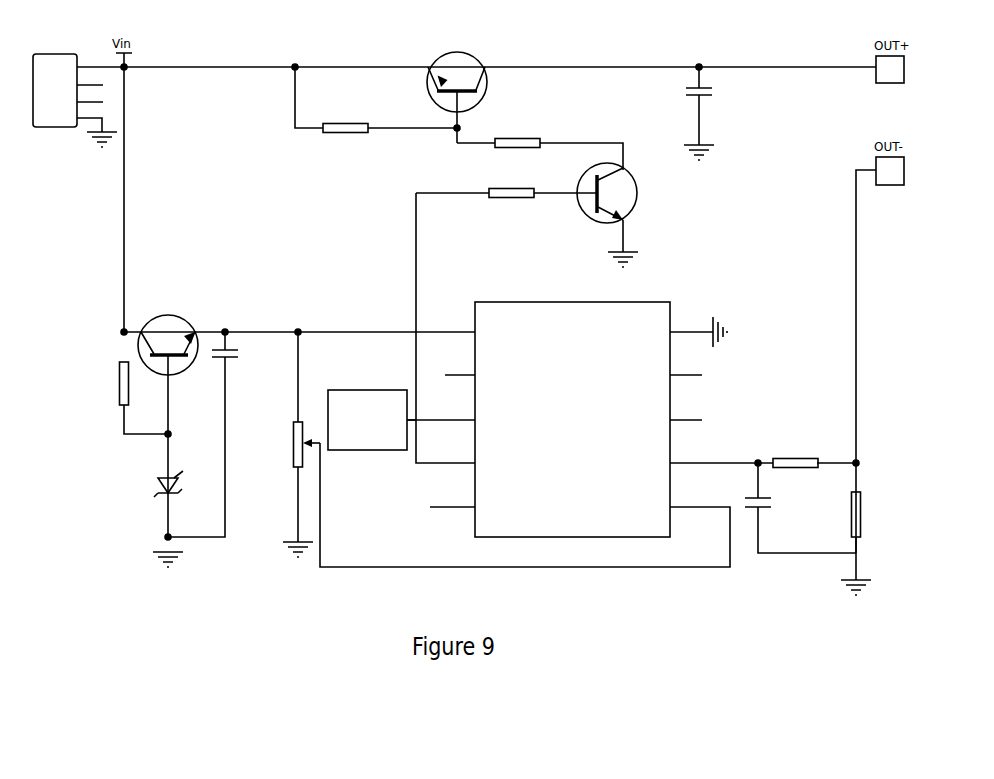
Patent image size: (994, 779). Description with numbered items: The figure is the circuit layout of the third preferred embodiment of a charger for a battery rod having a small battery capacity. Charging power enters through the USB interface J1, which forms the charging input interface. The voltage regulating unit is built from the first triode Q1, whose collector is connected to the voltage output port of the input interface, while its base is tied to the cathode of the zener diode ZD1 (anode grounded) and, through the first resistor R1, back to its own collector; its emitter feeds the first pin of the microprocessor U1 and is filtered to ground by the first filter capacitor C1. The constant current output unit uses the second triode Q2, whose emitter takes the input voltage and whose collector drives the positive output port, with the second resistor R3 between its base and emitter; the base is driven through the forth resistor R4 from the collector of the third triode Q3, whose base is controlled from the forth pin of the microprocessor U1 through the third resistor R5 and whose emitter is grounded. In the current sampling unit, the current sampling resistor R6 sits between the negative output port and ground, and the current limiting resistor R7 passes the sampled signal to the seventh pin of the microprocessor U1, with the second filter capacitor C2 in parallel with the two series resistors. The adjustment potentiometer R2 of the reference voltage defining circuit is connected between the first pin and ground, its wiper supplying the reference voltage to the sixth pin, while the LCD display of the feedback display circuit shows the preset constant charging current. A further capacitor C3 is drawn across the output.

The USB interface J1 is at (75, 92).
The first triode Q1 is at (168, 416).
The second triode Q2 is at (441, 97).
The third triode Q3 is at (599, 215).
The first resistor R1 is at (135, 398).
The adjustment potentiometer R2 is at (293, 443).
The second resistor R3 is at (374, 98).
The forth resistor R4 is at (540, 146).
The third resistor R5 is at (506, 207).
The current sampling resistor R6 is at (863, 543).
The current limiting resistor R7 is at (807, 454).
The first filter capacitor C1 is at (213, 433).
The second filter capacitor C2 is at (800, 508).
The capacitor C3 is at (710, 112).
The zener diode ZD1 is at (151, 519).
The microprocessor U1 is at (441, 425).
The LCD display LCD is at (372, 420).